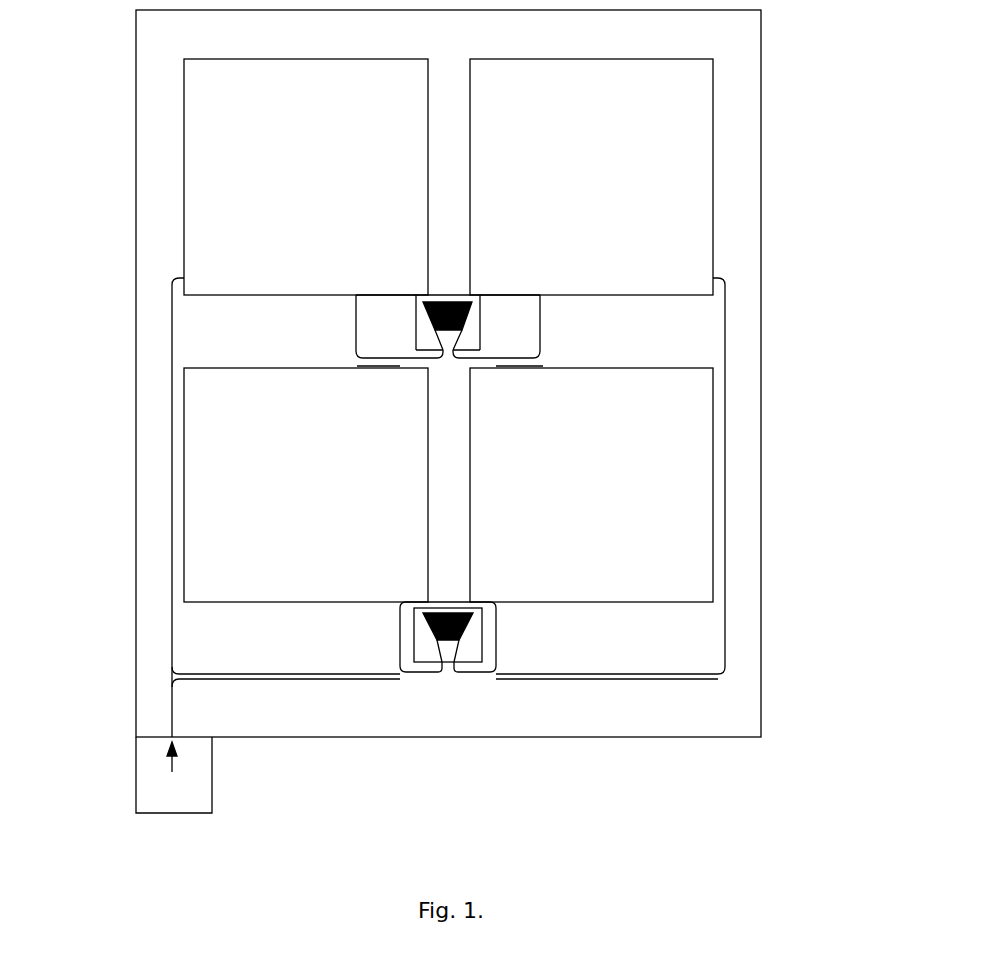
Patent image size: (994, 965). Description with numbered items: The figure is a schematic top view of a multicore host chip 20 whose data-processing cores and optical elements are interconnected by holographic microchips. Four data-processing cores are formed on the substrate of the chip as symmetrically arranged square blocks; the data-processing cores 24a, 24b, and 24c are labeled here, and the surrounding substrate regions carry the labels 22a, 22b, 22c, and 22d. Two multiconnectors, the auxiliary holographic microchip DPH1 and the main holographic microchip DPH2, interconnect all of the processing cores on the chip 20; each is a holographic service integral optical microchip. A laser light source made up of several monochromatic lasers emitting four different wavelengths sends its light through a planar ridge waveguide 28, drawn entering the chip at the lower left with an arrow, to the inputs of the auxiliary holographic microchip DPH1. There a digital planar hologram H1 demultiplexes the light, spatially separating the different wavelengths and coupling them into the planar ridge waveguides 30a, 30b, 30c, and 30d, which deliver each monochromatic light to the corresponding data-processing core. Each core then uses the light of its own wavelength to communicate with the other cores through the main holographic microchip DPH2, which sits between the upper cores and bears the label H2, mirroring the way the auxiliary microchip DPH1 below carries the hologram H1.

The host chip 20 is at (153, 252).
The first ink chamber 22a is at (356, 319).
The second ink chamber 22b is at (540, 313).
The first ink channel 22c is at (357, 366).
The second ink channel 22d is at (543, 361).
The data-processing core 24a is at (197, 126).
The data-processing core 24b is at (682, 130).
The data-processing core 24c is at (200, 546).
The planar ridge waveguide 28 is at (153, 783).
The planar ridge waveguide 30a is at (172, 400).
The planar ridge waveguide 30b is at (725, 388).
The planar ridge waveguide 30c is at (400, 655).
The planar ridge waveguide 30d is at (496, 655).
The digital planar hologram H1 is at (437, 636).
The second nozzle hole H2 is at (474, 302).
The auxiliary holographic microchip DPH1 is at (476, 660).
The main holographic microchip DPH2 is at (438, 300).